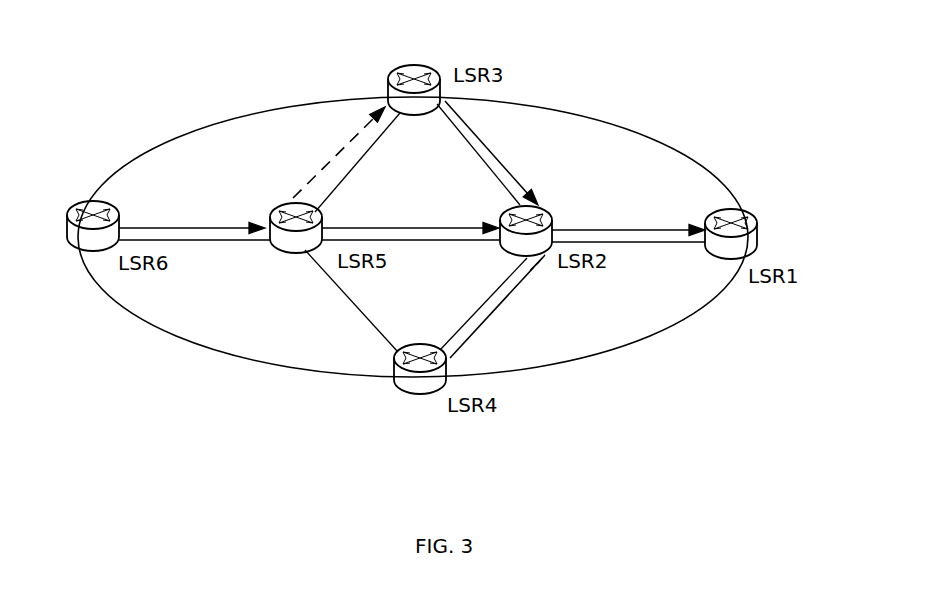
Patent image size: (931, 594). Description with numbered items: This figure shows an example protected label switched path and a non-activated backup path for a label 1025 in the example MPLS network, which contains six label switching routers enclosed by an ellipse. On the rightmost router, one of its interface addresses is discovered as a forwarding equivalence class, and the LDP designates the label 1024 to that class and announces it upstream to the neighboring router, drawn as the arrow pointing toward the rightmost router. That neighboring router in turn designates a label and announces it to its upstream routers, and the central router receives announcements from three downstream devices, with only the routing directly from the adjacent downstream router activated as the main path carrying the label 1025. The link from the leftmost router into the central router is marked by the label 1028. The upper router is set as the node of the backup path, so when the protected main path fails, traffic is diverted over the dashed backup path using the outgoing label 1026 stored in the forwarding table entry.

The LSP segment from LSR6 to LSR5 1028 is at (192, 213).
The outgoing label of LSR5 for the backup path 1026 is at (279, 152).
The label for the protected LSP 1025 is at (457, 229).
The label designated to the FEC by LSR1 1024 is at (628, 214).